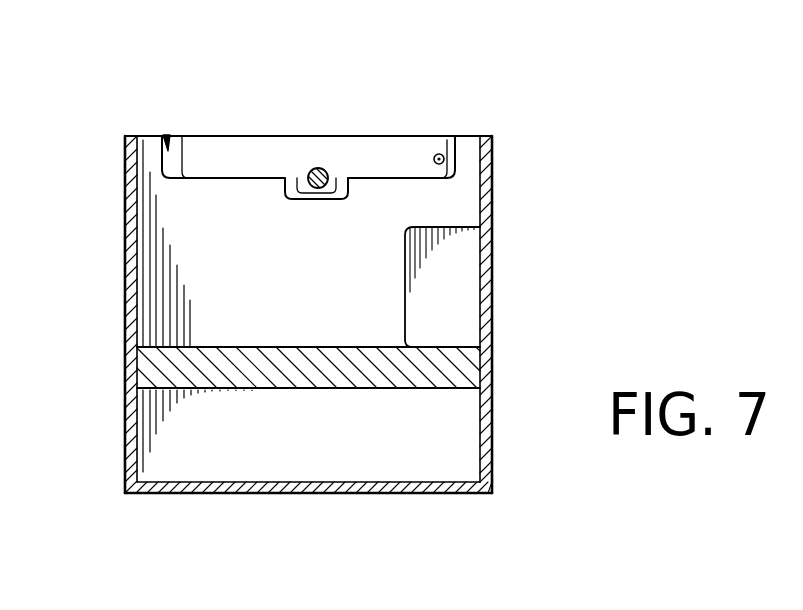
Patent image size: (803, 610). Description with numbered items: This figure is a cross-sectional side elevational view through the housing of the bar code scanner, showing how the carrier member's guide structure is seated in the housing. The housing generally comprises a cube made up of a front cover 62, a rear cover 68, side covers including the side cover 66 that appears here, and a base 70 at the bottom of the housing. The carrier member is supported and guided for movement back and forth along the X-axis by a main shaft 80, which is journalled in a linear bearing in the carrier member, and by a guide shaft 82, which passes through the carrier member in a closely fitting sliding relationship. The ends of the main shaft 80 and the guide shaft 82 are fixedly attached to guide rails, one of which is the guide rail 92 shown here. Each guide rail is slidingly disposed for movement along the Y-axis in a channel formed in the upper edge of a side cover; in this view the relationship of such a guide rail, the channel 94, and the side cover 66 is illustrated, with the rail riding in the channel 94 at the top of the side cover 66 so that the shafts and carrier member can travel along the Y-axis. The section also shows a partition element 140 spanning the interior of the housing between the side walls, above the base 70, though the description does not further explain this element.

The front cover 62 is at (483, 247).
The side cover 66 is at (175, 222).
The rear cover 68 is at (128, 343).
The base 70 is at (275, 490).
The main shaft 80 is at (320, 167).
The guide shaft 82 is at (439, 153).
The guide rail 92 is at (258, 150).
The channel 94 is at (165, 134).
The partition plate 140 is at (455, 372).